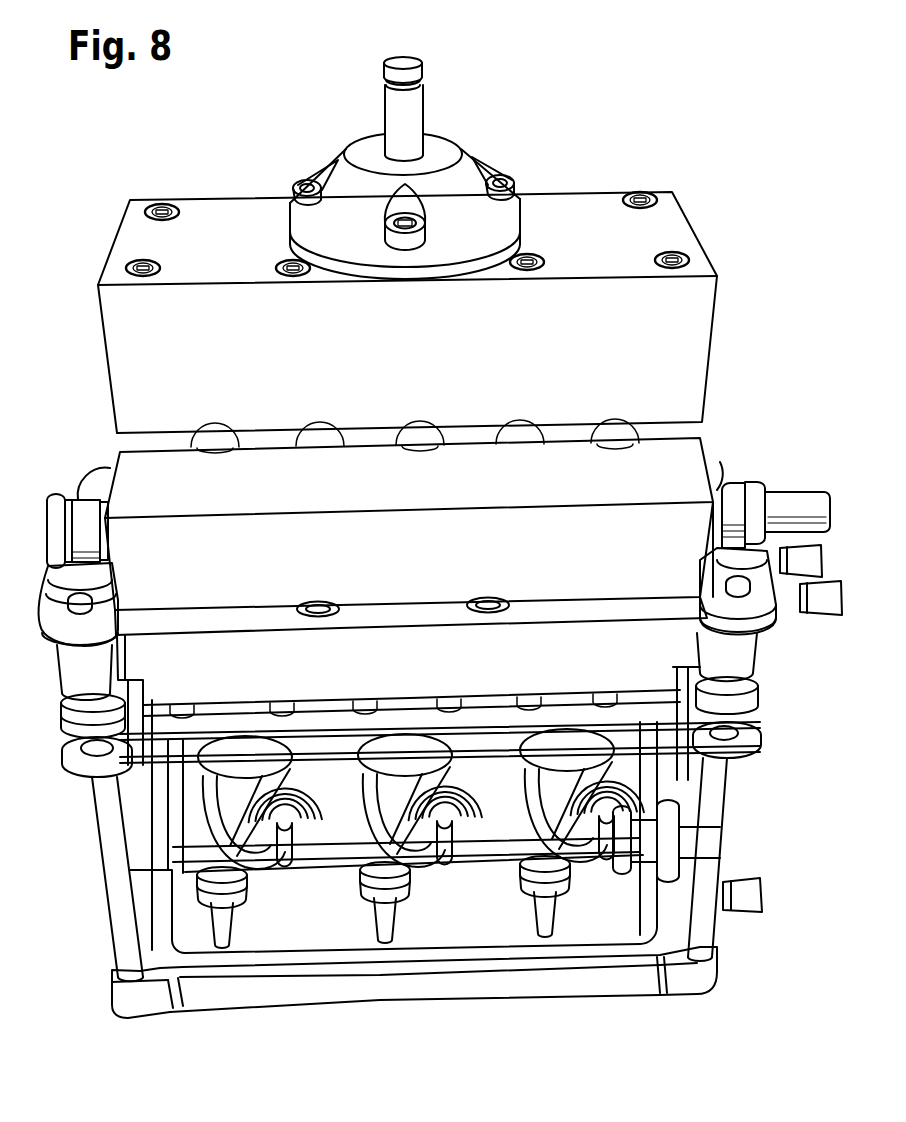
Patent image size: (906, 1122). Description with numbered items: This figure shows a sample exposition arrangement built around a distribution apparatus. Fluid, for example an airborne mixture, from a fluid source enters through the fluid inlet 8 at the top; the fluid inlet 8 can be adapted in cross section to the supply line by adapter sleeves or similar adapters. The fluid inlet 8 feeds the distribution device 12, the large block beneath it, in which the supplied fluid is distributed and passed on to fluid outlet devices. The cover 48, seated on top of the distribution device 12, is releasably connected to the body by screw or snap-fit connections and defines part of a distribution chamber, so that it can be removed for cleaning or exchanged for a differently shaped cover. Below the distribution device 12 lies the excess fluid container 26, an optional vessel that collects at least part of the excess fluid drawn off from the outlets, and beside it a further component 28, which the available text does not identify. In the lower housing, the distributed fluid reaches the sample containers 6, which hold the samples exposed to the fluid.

The fluid inlet 8 is at (412, 108).
The cover 48 is at (467, 157).
The distribution device 12 is at (698, 327).
The excess fluid container 26 is at (127, 476).
The port 28 is at (800, 503).
The sample containers 6 is at (496, 799).